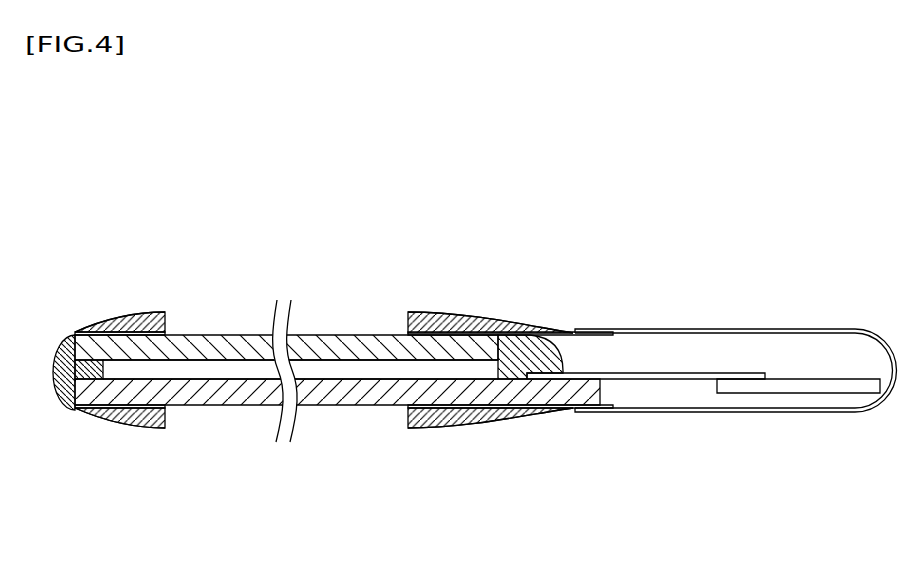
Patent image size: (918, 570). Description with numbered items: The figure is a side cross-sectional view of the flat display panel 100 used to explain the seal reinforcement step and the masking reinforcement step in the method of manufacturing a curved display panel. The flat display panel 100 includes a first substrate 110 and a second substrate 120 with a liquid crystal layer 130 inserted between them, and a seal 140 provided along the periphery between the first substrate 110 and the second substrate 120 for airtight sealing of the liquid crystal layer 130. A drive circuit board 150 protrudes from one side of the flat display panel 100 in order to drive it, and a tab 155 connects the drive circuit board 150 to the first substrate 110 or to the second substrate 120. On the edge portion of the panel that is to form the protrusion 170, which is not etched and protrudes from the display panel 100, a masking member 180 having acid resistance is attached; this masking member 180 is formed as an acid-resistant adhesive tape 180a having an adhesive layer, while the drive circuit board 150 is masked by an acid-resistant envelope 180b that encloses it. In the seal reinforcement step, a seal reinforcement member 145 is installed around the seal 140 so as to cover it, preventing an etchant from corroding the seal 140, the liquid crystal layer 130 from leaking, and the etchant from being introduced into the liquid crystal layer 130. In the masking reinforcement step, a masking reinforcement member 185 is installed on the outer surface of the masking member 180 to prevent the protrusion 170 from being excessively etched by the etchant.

The flat display panel 100 is at (178, 186).
The first substrate 110 is at (252, 345).
The second substrate 120 is at (330, 413).
The liquid crystal layer 130 is at (227, 368).
The seal 140 is at (550, 360).
The seal reinforcement member 145 is at (56, 351).
The drive circuit board 150 is at (787, 393).
The tab 155 is at (663, 380).
The protrusion 170 is at (137, 345).
The masking member 180 is at (102, 333).
The acid-resistant adhesive tape 180a is at (505, 333).
The acid-resistant envelope 180b is at (700, 329).
The masking reinforcement member 185 is at (124, 327).